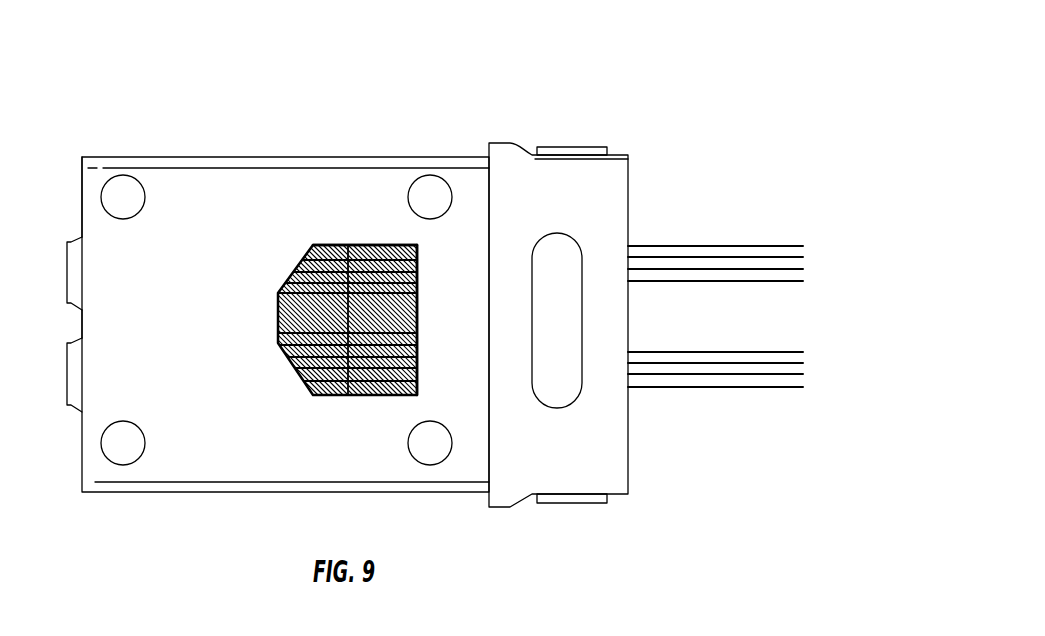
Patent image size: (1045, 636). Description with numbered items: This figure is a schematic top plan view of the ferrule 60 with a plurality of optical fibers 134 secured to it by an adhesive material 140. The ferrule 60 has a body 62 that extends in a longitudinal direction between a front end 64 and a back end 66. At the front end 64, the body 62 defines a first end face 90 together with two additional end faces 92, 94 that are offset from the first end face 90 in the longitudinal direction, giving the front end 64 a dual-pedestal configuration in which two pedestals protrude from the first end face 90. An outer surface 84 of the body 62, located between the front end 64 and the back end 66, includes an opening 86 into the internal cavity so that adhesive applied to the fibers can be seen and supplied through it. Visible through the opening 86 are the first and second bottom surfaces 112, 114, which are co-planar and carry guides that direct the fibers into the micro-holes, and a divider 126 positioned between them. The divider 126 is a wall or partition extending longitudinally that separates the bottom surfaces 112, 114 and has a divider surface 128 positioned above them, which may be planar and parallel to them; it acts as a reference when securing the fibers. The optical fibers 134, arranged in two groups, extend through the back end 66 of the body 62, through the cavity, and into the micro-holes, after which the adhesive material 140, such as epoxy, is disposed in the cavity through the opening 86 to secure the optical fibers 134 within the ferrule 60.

The ferrule 60 is at (240, 82).
The body 62 is at (158, 150).
The front end 64 is at (80, 163).
The back end 66 is at (630, 161).
The outer surface 84 is at (350, 183).
The opening 86 is at (302, 247).
The first end face 90 is at (82, 327).
The additional end face 92 is at (67, 270).
The additional end face 94 is at (67, 372).
The first bottom surface 112 is at (303, 298).
The second bottom surface 114 is at (293, 341).
The divider 126 is at (321, 338).
The divider surface 128 is at (305, 316).
The optical fibers 134 is at (686, 245).
The adhesive material 140 is at (408, 307).